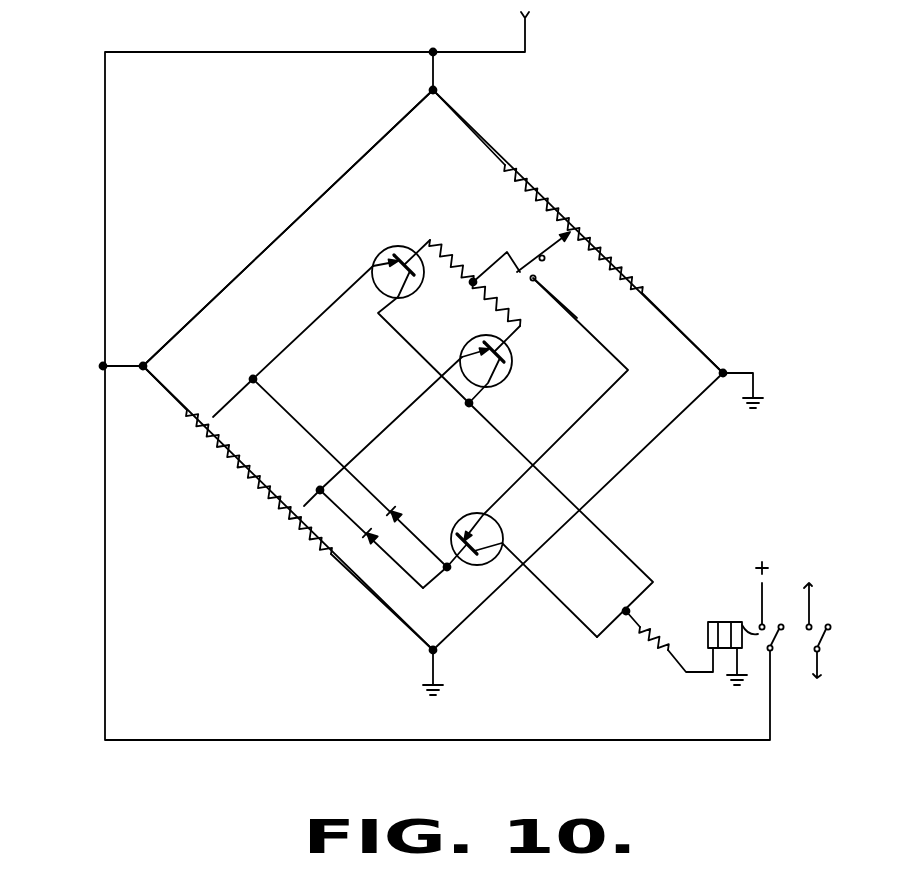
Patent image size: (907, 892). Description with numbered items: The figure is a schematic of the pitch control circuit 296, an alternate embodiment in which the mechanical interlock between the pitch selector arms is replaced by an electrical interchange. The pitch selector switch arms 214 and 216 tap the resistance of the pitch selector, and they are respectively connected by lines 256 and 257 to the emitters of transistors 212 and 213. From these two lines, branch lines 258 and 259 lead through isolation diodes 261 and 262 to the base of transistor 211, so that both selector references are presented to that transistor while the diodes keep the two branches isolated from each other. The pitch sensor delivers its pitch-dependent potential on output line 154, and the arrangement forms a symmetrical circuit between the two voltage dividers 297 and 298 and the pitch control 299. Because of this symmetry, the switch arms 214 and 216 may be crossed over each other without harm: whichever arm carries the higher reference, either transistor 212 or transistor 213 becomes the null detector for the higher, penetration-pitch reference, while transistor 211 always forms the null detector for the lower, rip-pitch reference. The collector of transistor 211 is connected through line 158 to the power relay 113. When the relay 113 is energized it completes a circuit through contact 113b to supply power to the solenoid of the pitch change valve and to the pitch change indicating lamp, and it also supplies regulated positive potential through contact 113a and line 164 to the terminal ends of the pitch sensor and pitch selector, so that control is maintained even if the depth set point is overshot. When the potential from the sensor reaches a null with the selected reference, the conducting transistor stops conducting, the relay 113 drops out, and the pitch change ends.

The line 164 is at (640, 741).
The pitch control circuit 296 is at (645, 238).
The output line 154 is at (552, 250).
The voltage divider 297 is at (567, 272).
The pitch control 299 is at (325, 285).
The transistor 213 is at (378, 255).
The transistor 212 is at (511, 372).
The transistor 211 is at (498, 520).
The line 257 is at (308, 333).
The voltage divider 298 is at (200, 401).
The pitch selector switch arm 216 is at (226, 412).
The pitch selector switch arm 214 is at (300, 499).
The line 256 is at (394, 418).
The branch line 259 is at (370, 490).
The isolation diode 262 is at (400, 514).
The isolation diode 261 is at (373, 543).
The branch line 258 is at (421, 588).
The line 158 is at (566, 605).
The relay 113 is at (714, 621).
The contact 113a is at (756, 634).
The contact 113b is at (818, 624).